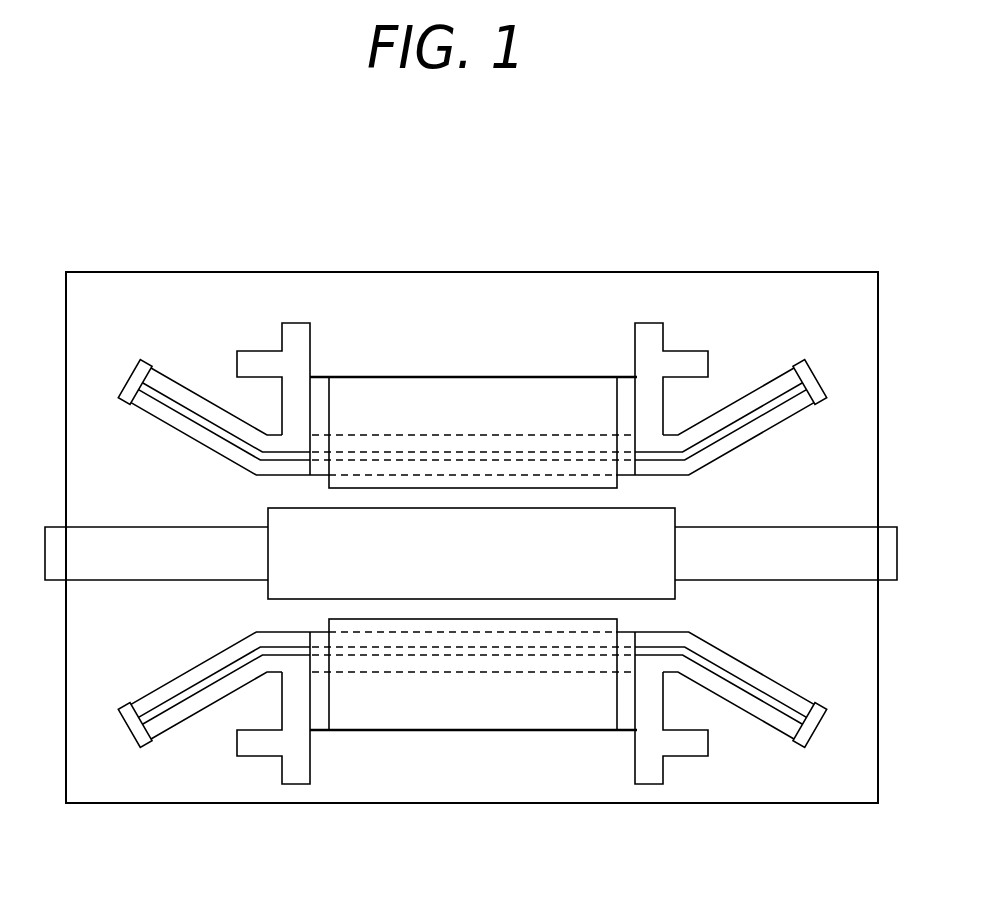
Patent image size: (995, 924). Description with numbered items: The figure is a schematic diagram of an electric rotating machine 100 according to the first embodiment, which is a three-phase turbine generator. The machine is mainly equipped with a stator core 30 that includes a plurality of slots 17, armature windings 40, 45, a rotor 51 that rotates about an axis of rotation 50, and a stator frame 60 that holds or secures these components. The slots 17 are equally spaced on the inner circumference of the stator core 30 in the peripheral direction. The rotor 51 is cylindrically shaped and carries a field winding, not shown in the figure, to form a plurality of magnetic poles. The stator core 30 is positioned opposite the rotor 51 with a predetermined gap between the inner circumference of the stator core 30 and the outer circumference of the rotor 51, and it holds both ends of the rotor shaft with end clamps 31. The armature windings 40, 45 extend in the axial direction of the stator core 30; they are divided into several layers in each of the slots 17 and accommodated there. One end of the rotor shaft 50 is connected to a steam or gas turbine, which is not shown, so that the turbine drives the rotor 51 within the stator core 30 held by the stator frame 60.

The electric rotating machine 100 is at (797, 207).
The stator frame 60 is at (670, 277).
The axis of rotation 50 is at (780, 532).
The rotor 51 is at (292, 517).
The stator core 30 is at (520, 386).
The slots 17 is at (383, 433).
The end clamps 31 is at (293, 337).
The armature winding 40 is at (808, 364).
The armature winding 45 is at (823, 393).